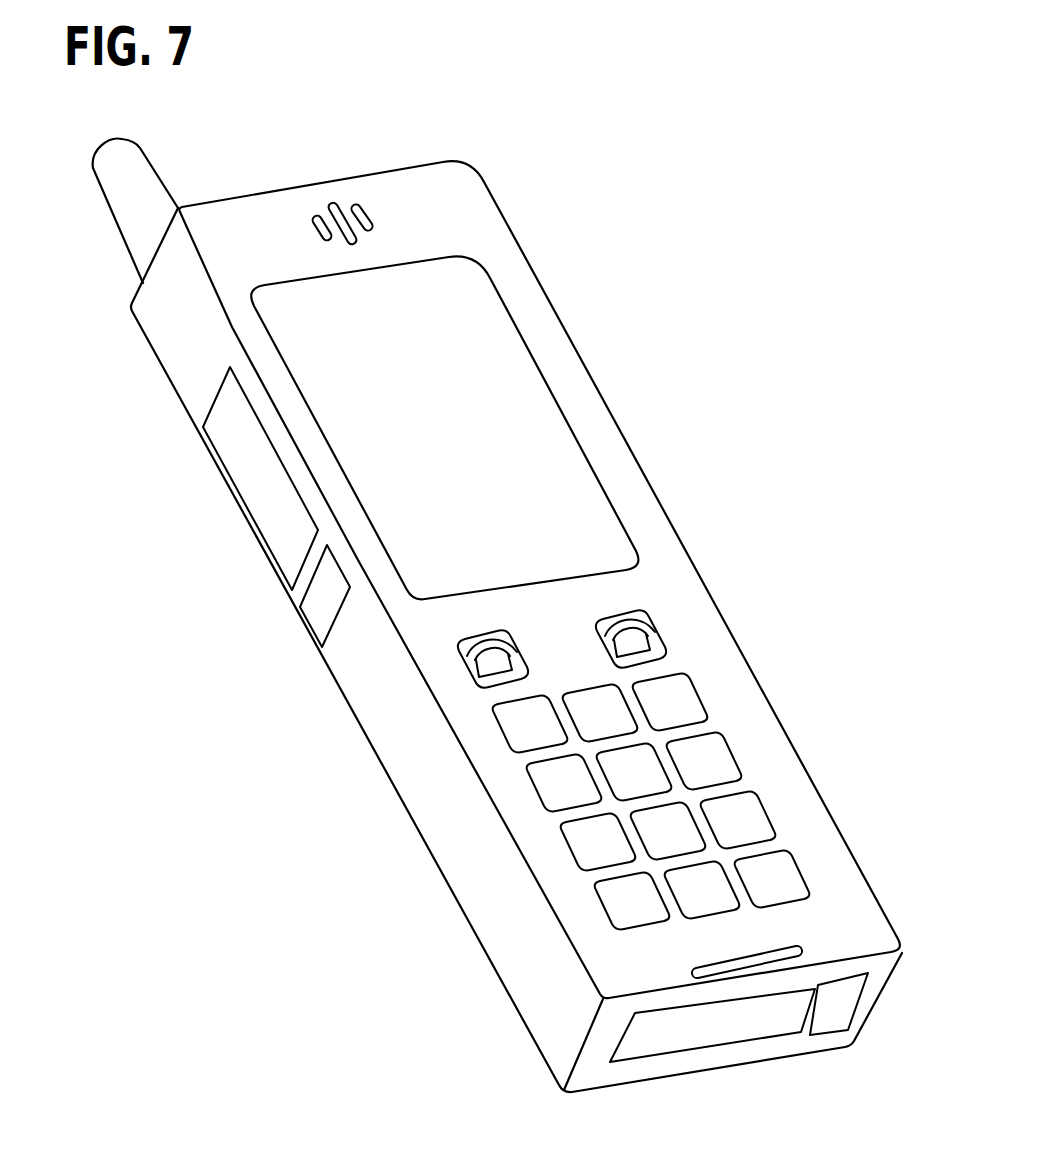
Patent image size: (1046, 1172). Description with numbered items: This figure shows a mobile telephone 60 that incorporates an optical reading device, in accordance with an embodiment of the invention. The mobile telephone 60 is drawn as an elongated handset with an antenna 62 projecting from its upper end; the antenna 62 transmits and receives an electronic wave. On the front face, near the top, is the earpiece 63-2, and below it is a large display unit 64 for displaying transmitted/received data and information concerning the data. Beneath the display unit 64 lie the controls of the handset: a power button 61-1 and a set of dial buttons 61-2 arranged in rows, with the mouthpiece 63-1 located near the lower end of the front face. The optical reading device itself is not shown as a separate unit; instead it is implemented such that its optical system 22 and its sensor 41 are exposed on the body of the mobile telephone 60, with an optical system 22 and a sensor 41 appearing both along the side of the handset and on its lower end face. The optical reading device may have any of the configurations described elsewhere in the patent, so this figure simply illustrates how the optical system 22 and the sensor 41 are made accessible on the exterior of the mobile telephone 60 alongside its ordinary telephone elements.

The mobile telephone 60 is at (678, 215).
The power button 61-1 is at (647, 615).
The dial buttons 61-2 is at (758, 748).
The antenna 62 is at (167, 190).
The mouthpiece 63-1 is at (803, 956).
The earpiece 63-2 is at (345, 198).
The display unit 64 is at (595, 477).
The optical system 22 is at (240, 497).
The sensor 41 is at (302, 613).